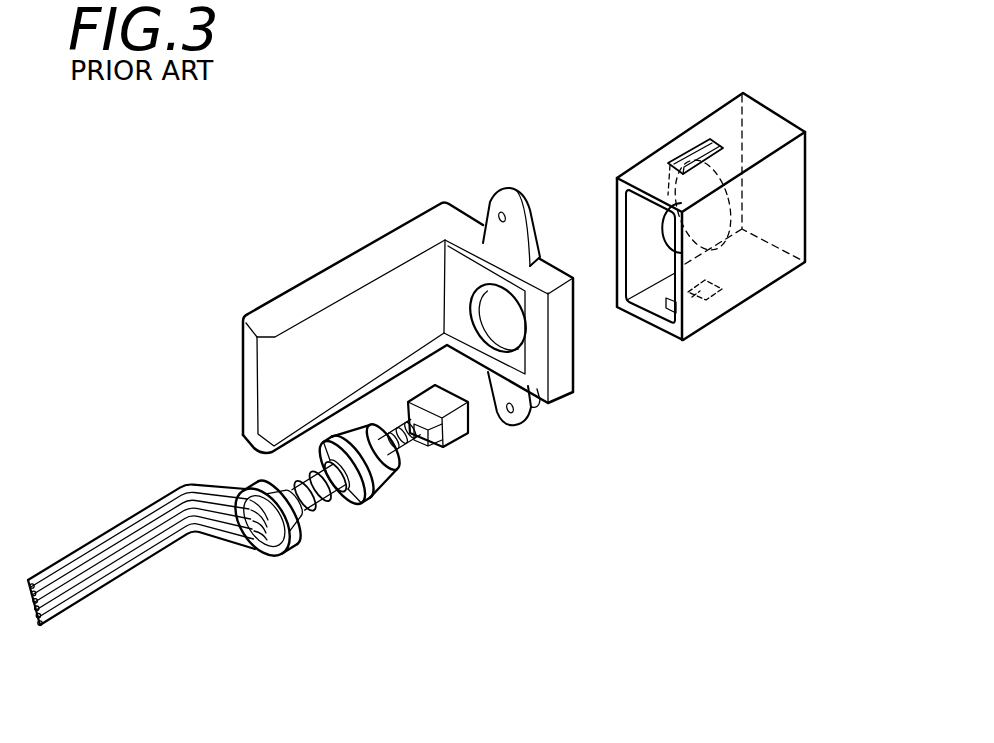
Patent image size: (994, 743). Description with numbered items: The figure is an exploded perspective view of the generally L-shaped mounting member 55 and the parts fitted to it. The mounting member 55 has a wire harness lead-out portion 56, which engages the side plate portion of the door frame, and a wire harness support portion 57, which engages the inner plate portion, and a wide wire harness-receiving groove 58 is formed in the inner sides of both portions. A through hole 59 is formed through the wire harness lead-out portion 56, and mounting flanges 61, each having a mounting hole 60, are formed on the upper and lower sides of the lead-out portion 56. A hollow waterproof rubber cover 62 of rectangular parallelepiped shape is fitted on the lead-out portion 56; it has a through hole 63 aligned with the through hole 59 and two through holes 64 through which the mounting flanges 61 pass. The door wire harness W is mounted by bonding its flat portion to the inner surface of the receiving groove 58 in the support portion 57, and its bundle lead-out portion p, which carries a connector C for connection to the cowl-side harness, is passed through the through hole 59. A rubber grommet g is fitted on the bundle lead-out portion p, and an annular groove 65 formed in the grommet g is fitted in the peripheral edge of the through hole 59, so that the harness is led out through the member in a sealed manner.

The mounting member 55 is at (379, 224).
The wire harness lead-out portion 56 is at (548, 270).
The wire harness support portion 57 is at (305, 283).
The wire harness-receiving groove 58 is at (272, 358).
The through hole 59 is at (510, 330).
The mounting hole 60 is at (502, 205).
The mounting flange 61 is at (487, 213).
The waterproof rubber cover 62 is at (807, 193).
The through hole 63 is at (670, 227).
The through holes 64 is at (697, 142).
The annular groove 65 is at (293, 488).
The door wire harness W is at (123, 563).
The grommet g is at (298, 527).
The bundle lead-out portion p is at (407, 447).
The connector C is at (455, 430).